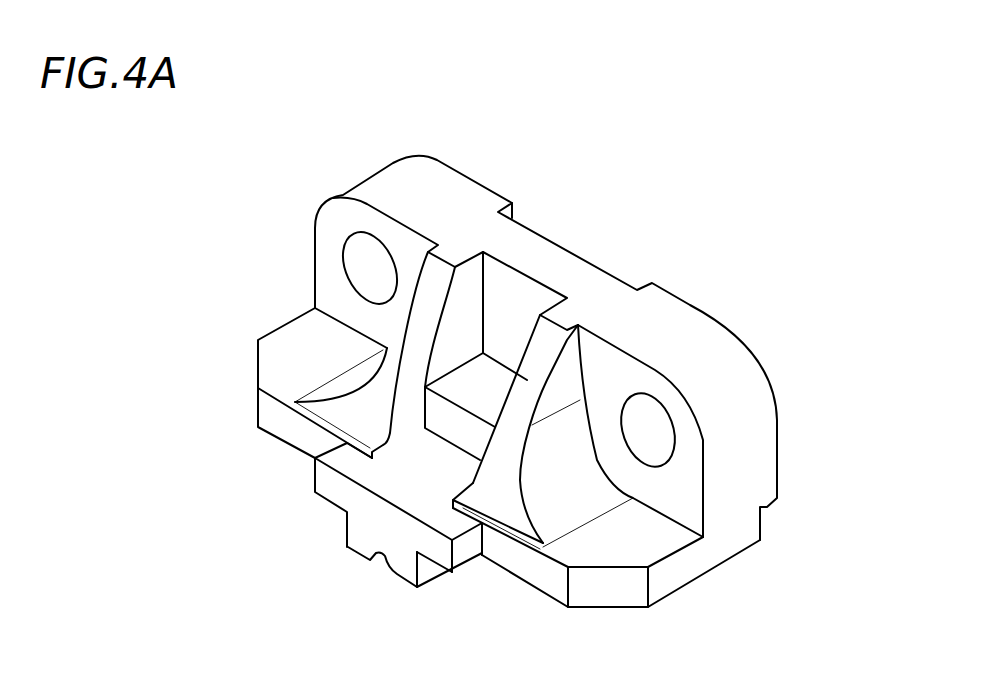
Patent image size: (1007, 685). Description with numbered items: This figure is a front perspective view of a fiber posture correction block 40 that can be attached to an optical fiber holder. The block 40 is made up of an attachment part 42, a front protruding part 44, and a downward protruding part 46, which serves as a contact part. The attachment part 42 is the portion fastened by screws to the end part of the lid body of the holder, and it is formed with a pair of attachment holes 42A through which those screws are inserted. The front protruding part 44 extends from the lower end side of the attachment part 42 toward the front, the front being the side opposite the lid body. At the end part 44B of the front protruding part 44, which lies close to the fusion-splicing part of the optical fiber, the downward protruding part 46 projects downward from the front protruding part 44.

The block 40 is at (650, 165).
The attachment part 42 is at (705, 333).
The attachment holes 42A is at (362, 236).
The front protruding part 44 is at (635, 545).
The end part 44B is at (517, 563).
The downward protruding part 46 is at (377, 528).